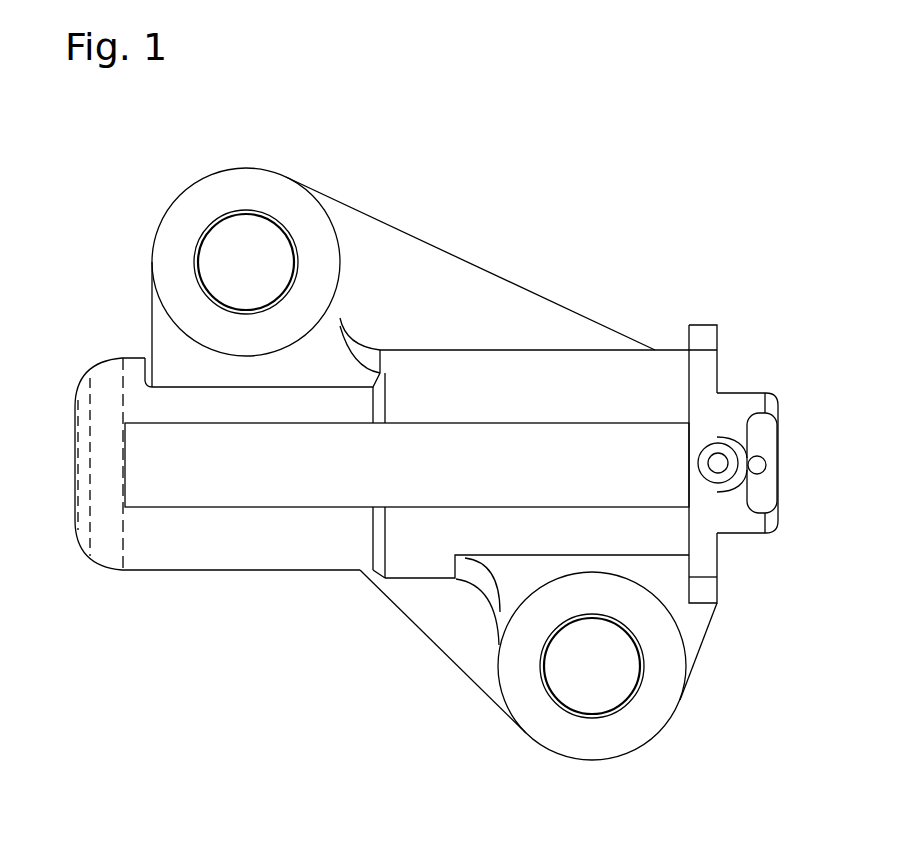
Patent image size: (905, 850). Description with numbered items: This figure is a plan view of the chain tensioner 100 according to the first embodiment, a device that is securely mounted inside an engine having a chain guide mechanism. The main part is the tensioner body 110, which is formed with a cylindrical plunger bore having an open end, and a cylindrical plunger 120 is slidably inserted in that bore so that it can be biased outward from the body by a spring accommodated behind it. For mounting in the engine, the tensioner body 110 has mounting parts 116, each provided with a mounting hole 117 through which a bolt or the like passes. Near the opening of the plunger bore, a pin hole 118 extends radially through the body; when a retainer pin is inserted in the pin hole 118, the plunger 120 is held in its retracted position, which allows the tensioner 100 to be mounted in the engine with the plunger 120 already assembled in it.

The chain tensioner 100 is at (663, 187).
The tensioner body 110 is at (428, 367).
The mounting part 116 is at (275, 200).
The mounting hole 117 is at (242, 254).
The pin hole 118 is at (718, 460).
The plunger 120 is at (735, 517).